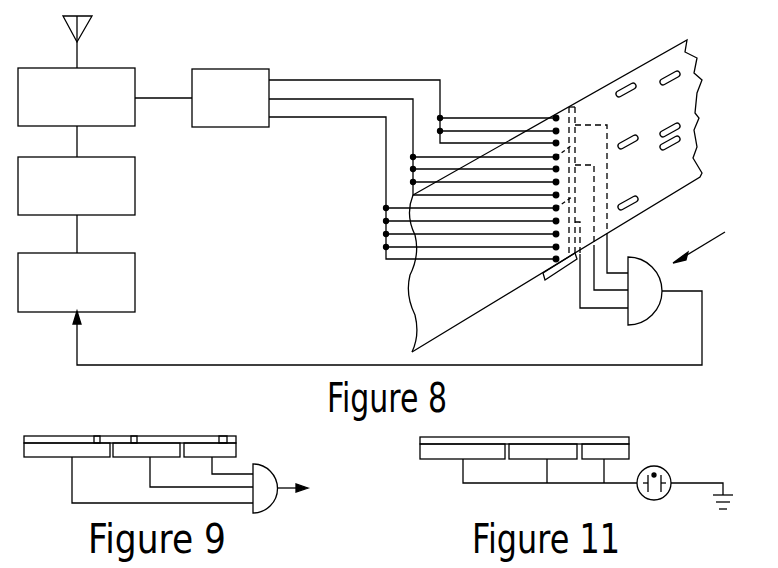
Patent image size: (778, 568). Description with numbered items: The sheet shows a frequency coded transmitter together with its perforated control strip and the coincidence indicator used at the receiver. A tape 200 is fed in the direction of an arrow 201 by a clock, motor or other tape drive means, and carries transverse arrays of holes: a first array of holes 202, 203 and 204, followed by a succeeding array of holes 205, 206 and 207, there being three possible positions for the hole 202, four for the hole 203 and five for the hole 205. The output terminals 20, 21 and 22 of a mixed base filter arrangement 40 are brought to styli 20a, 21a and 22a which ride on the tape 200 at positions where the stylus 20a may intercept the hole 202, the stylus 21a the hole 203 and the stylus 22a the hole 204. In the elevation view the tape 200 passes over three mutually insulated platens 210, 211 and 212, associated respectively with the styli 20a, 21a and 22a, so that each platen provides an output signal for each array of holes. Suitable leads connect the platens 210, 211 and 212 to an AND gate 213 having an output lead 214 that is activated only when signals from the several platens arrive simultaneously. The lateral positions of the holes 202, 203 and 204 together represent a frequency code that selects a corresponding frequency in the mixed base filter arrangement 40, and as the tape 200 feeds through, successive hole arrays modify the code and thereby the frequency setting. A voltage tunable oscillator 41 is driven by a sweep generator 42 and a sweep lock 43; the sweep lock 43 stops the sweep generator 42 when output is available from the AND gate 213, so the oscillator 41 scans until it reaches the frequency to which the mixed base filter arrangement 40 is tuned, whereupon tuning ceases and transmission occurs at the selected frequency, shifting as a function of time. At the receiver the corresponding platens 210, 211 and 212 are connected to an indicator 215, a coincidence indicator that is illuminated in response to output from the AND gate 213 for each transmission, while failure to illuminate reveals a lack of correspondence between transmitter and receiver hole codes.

In FIG. 8, the output terminal 20 is at (366, 80).
In FIG. 8, the output terminal 21 is at (316, 99).
In FIG. 8, the output terminal 22 is at (364, 118).
In FIG. 8, the stylus 20a is at (567, 124).
In FIG. 9, the stylus 20a is at (60, 435).
In FIG. 8, the stylus 21a is at (558, 157).
In FIG. 8, the stylus 22a is at (547, 268).
In FIG. 8, the mixed base filter arrangement 40 is at (232, 69).
In FIG. 8, the voltage tunable oscillator 41 is at (95, 68).
In FIG. 8, the sweep generator 42 is at (110, 216).
In FIG. 8, the sweep lock 43 is at (110, 313).
In FIG. 8, the tape 200 is at (656, 212).
In FIG. 9, the tape 200 is at (172, 436).
In FIG. 8, the arrow 201 is at (702, 253).
In FIG. 8, the hole 202 is at (619, 92).
In FIG. 9, the hole 202 is at (222, 436).
In FIG. 8, the hole 203 is at (626, 150).
In FIG. 9, the hole 203 is at (134, 436).
In FIG. 8, the hole 204 is at (627, 197).
In FIG. 9, the hole 204 is at (97, 436).
In FIG. 8, the hole 205 is at (683, 70).
In FIG. 8, the hole 206 is at (680, 126).
In FIG. 8, the hole 207 is at (682, 146).
In FIG. 9, the platen 210 is at (55, 459).
In FIG. 11, the platen 210 is at (437, 460).
In FIG. 9, the platen 211 is at (134, 459).
In FIG. 11, the platen 211 is at (530, 460).
In FIG. 9, the platen 212 is at (205, 459).
In FIG. 11, the platen 212 is at (592, 460).
In FIG. 8, the AND gate 213 is at (640, 322).
In FIG. 9, the AND gate 213 is at (268, 470).
In FIG. 9, the output lead 214 is at (283, 487).
In FIG. 11, the indicator 215 is at (672, 476).